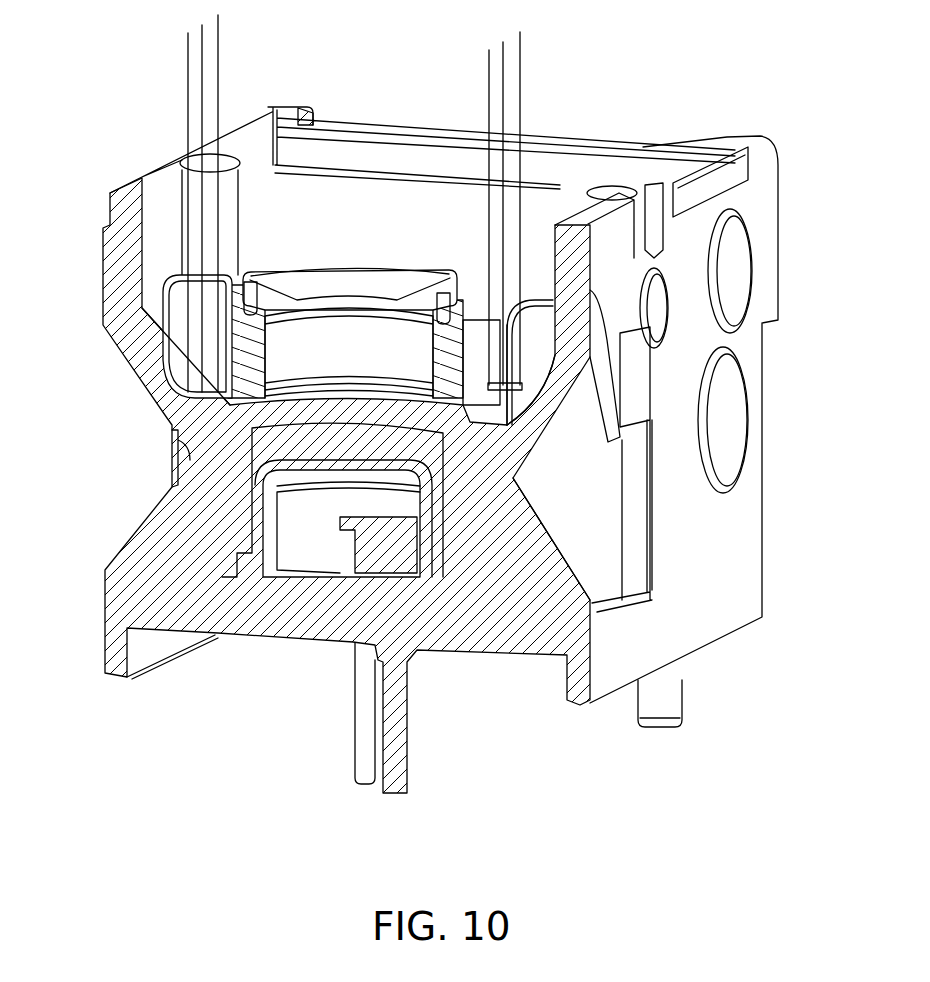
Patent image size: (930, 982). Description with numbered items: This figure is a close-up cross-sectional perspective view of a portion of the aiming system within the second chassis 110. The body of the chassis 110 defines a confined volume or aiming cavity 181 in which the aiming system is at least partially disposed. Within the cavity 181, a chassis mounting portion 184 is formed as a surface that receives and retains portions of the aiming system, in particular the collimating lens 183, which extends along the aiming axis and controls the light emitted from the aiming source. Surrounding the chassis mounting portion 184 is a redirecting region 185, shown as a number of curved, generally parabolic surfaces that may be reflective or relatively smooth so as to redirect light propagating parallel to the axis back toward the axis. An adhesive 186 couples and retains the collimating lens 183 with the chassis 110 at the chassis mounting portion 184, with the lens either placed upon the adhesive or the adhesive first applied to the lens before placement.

The second chassis 110 is at (733, 626).
The aiming cavity 181 is at (321, 258).
The collimating lens 183 is at (258, 285).
The chassis mounting portion 184 is at (530, 512).
The redirecting region 185 is at (164, 336).
The adhesive 186 is at (262, 290).